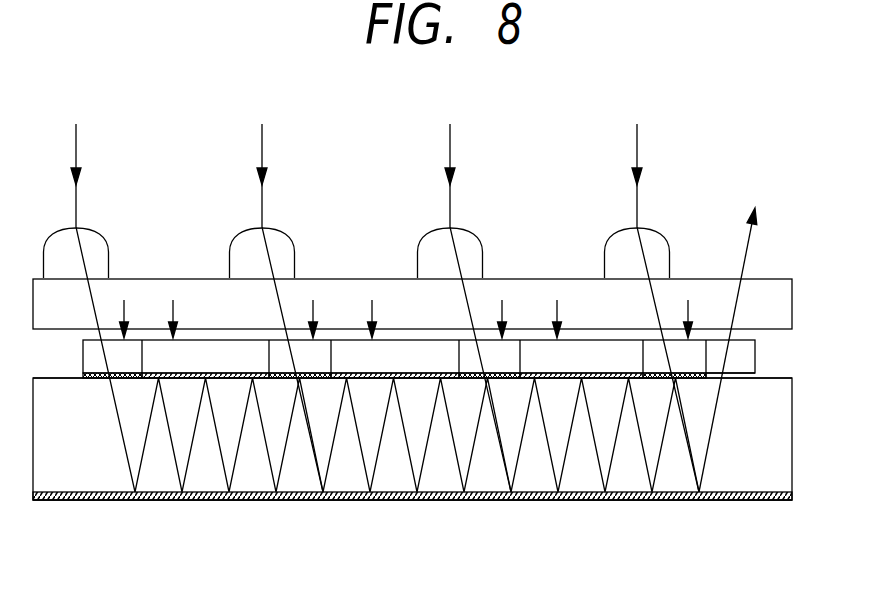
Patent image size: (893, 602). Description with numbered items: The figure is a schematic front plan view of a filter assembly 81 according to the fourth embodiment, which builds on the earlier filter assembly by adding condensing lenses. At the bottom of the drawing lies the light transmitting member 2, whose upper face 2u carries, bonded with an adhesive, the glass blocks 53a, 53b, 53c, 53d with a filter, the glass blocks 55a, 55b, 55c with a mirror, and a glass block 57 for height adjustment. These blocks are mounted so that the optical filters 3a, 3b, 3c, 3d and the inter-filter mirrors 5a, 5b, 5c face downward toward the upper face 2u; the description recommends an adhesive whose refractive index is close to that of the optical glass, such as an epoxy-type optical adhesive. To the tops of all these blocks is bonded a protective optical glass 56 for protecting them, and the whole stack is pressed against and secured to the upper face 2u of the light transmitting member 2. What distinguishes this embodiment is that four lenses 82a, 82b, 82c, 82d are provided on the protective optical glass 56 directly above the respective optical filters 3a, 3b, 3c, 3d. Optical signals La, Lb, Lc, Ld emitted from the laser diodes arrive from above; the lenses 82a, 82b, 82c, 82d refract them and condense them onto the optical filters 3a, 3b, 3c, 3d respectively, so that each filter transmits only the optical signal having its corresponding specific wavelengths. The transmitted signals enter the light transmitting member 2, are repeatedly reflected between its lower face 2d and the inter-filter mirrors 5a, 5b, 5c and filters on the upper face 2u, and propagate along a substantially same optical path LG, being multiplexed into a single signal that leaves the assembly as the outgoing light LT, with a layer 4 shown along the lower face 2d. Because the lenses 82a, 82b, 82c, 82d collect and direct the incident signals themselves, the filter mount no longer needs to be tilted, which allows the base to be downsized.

The filter assembly 81 is at (415, 163).
The lens 82a is at (104, 233).
The lens 82b is at (290, 233).
The lens 82c is at (478, 233).
The lens 82d is at (665, 233).
The optical signal La is at (78, 208).
The optical signal Lb is at (264, 208).
The optical signal Lc is at (452, 208).
The optical signal Ld is at (639, 208).
The glass block with a filter 53a is at (124, 300).
The glass block with a filter 53b is at (313, 300).
The glass block with a filter 53c is at (502, 300).
The glass block with a filter 53d is at (688, 300).
The glass block with a mirror 55a is at (173, 300).
The glass block with a mirror 55b is at (372, 300).
The glass block with a mirror 55c is at (557, 300).
The protective optical glass 56 is at (792, 279).
The glass block for height adjustment 57 is at (757, 350).
The light transmitting member 2 is at (794, 402).
The upper face of the light transmitting member 2u is at (794, 378).
The lower surface of light guide plate 2d is at (783, 500).
The optical filter 3a is at (99, 380).
The optical filter 3b is at (287, 380).
The optical filter 3c is at (472, 380).
The optical filter 3d is at (692, 380).
The inter-filter mirror 5a is at (197, 380).
The inter-filter mirror 5b is at (377, 380).
The inter-filter mirror 5c is at (617, 380).
The reflection sheet 4 is at (559, 500).
The optical path LG is at (424, 460).
The outgoing light LT is at (757, 236).